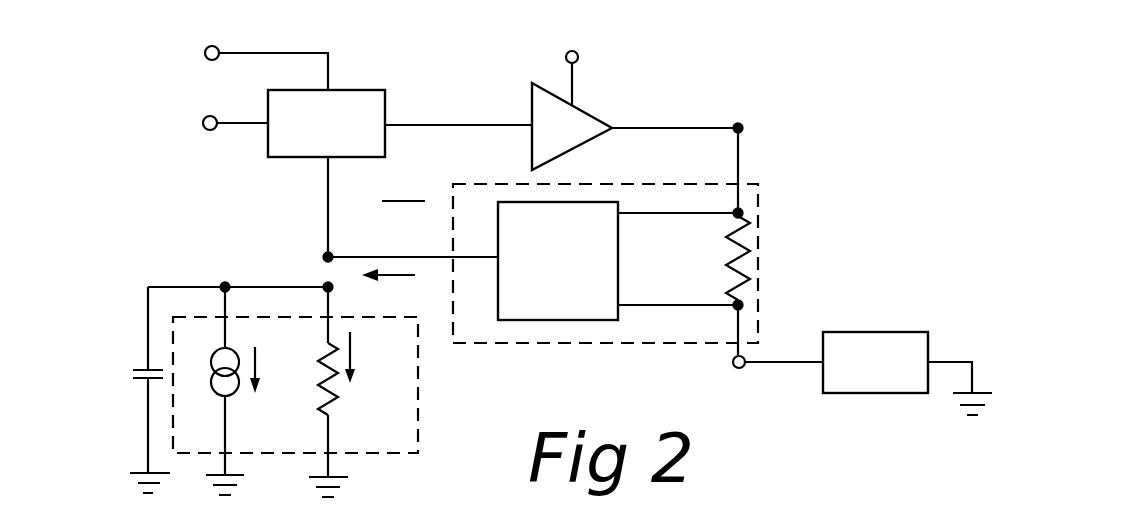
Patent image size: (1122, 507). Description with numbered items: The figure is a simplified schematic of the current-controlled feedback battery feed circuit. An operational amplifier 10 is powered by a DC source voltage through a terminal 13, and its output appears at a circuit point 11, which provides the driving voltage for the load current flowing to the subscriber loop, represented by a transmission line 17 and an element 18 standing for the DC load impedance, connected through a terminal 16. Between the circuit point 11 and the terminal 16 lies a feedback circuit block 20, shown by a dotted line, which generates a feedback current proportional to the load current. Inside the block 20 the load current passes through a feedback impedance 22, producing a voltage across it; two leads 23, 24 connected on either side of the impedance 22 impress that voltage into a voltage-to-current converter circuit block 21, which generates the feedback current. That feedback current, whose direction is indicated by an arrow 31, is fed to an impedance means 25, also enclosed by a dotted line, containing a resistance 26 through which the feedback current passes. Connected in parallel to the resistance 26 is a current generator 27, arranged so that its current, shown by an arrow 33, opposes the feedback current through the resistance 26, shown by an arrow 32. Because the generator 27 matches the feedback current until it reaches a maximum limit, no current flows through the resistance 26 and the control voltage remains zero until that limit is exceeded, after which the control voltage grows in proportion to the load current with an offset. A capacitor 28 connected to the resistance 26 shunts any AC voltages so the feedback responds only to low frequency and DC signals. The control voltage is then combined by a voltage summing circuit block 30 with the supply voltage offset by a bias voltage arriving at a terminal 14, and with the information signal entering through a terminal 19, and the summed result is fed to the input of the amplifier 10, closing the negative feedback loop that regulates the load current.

The operational amplifier 10 is at (583, 111).
The circuit point 11 is at (756, 118).
The terminal 13 is at (578, 54).
The terminal 14 is at (215, 129).
The terminal 16 is at (738, 368).
The transmission line 17 is at (775, 356).
The element representing DC load impedance 18 is at (855, 332).
The terminal 19 is at (214, 46).
The feedback circuit block 20 is at (605, 263).
The voltage-to-current converter circuit block 21 is at (608, 320).
The feedback impedance 22 is at (740, 272).
The lead 23 is at (680, 213).
The lead 24 is at (642, 288).
The impedance means 25 is at (366, 383).
The resistance 26 is at (336, 406).
The current generator 27 is at (216, 392).
The capacitor 28 is at (142, 380).
The voltage summing circuit block 30 is at (385, 100).
The arrow 31 is at (395, 276).
The arrow 32 is at (362, 366).
The arrow 33 is at (257, 366).